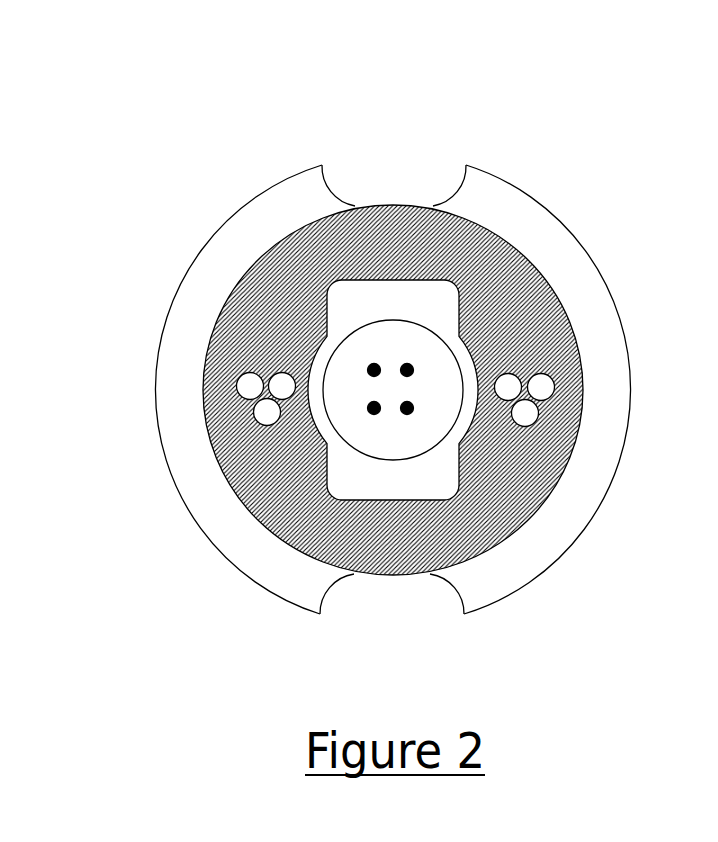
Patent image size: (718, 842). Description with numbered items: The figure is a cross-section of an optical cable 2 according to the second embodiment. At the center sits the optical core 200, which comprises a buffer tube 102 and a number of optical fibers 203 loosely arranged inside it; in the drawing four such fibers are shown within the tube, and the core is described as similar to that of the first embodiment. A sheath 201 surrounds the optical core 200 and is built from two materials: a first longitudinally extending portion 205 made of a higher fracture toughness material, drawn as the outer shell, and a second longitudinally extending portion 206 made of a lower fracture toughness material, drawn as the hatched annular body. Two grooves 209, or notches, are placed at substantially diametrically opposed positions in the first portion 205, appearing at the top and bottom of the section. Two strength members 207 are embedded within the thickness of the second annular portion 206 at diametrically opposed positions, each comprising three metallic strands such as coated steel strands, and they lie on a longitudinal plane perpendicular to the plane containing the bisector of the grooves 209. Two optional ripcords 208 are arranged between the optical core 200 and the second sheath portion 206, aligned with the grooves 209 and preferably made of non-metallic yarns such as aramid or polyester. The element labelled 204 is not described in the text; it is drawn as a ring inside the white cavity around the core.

The optical cable 2 is at (238, 107).
The buffer tube 102 is at (472, 353).
The optical core 200 is at (301, 324).
The sheath 201 is at (534, 170).
The optical fibers 203 is at (412, 408).
The buffer tube 204 is at (343, 413).
The first longitudinally extending portion 205 is at (162, 343).
The second longitudinally extending portion 206 is at (243, 515).
The strength members 207 is at (232, 411).
The ripcords 208 is at (337, 287).
The grooves 209 is at (394, 205).